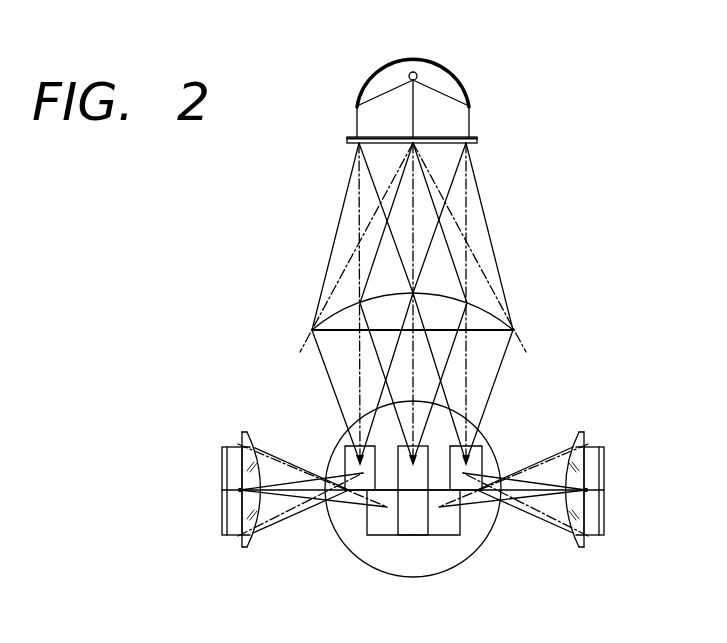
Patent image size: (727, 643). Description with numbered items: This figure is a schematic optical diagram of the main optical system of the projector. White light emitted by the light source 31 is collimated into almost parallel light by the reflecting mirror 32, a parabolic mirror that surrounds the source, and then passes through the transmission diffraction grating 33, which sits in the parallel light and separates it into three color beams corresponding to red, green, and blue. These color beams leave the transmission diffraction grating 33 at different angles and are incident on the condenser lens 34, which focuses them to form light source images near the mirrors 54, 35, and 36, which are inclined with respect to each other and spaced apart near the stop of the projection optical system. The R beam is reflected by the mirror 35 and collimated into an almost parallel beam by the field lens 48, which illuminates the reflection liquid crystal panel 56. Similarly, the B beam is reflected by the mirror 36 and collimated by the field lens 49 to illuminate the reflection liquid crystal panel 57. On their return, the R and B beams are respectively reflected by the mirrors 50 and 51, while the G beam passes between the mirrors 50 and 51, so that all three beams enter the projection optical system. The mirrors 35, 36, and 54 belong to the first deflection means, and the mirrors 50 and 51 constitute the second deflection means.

The light source 31 is at (417, 73).
The reflecting mirror 32 is at (455, 84).
The transmission diffraction grating 33 is at (478, 141).
The condenser lens 34 is at (497, 310).
The mirror 35 is at (483, 441).
The mirror 36 is at (344, 443).
The field lens 48 is at (580, 432).
The field lens 49 is at (246, 432).
The mirror 50 is at (461, 535).
The mirror 51 is at (363, 535).
The mirror 54 is at (343, 417).
The reflection liquid crystal panel 56 is at (603, 537).
The reflection liquid crystal panel 57 is at (223, 537).